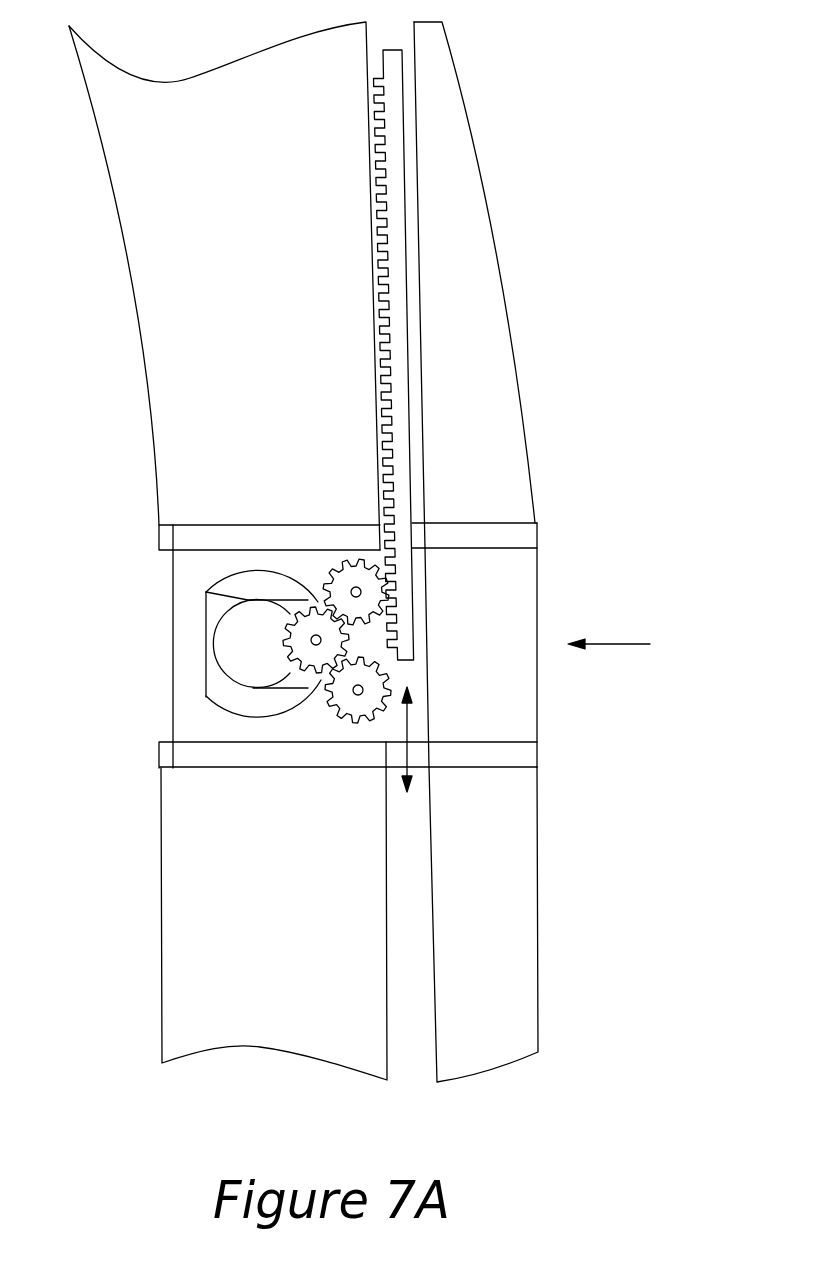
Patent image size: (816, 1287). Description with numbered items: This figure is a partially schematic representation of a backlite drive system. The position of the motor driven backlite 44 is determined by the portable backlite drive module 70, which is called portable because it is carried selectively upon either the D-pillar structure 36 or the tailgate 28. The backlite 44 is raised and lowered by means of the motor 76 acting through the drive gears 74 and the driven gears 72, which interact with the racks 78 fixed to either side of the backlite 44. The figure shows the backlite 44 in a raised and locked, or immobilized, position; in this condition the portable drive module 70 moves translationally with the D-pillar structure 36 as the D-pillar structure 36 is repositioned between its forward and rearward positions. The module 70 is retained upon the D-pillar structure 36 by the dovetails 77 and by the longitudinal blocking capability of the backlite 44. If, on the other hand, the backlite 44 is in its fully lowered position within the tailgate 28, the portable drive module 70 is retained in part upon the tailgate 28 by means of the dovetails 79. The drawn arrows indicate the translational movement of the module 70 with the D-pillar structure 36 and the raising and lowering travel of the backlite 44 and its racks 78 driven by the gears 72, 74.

The tailgate 28 is at (538, 908).
The D-pillar structure 36 is at (492, 213).
The motor driven backlite 44 is at (408, 381).
The portable backlite drive module 70 is at (537, 600).
The driven gears 72 is at (325, 570).
The drive gears 74 is at (206, 592).
The motor 76 is at (206, 696).
The dovetails 77 is at (223, 537).
The racks 78 is at (380, 342).
The dovetails 79 is at (213, 762).